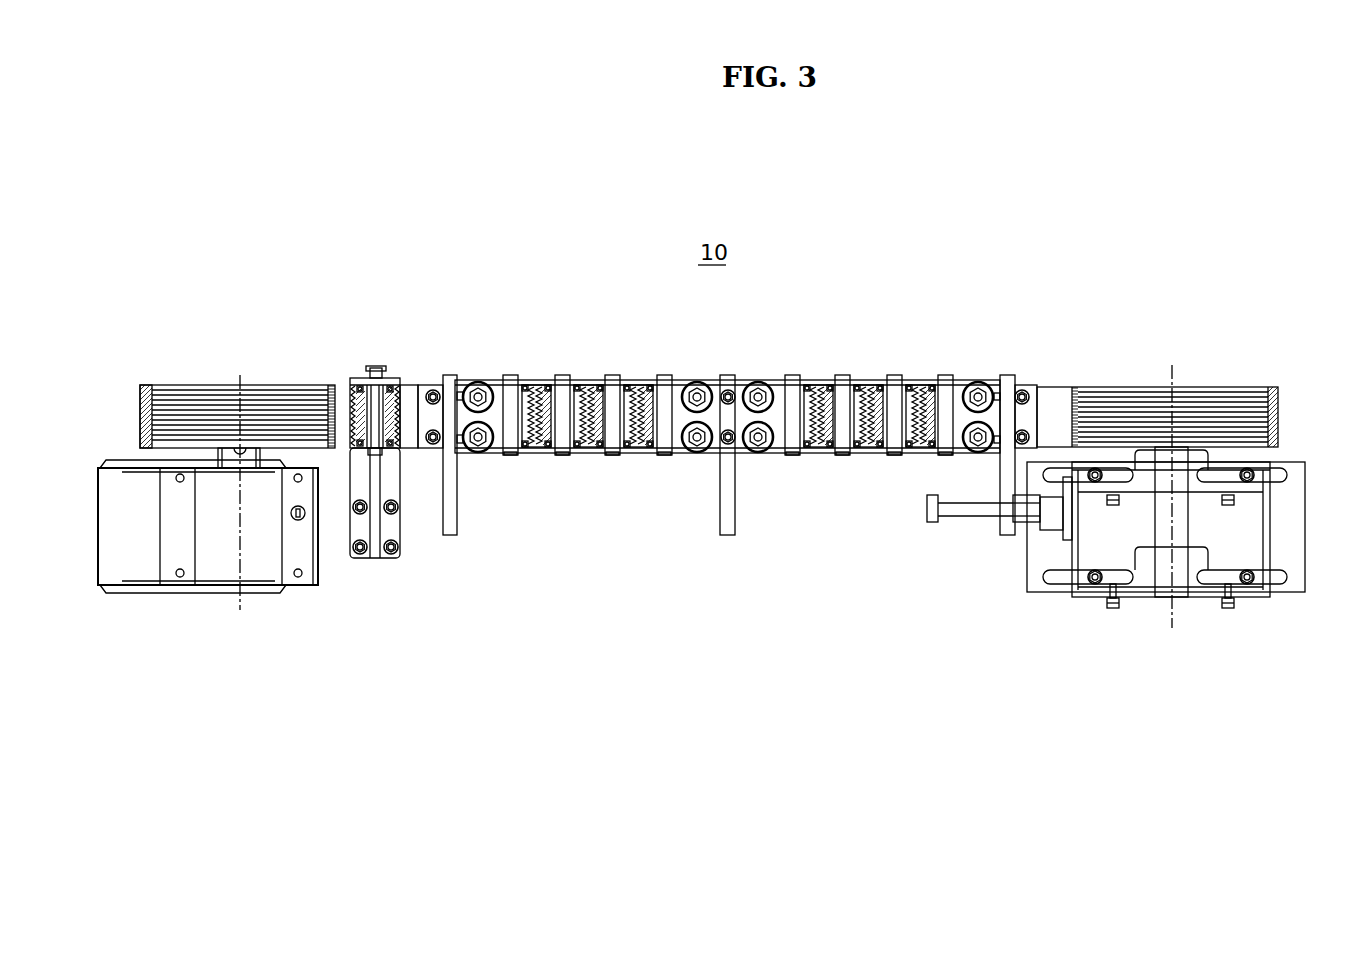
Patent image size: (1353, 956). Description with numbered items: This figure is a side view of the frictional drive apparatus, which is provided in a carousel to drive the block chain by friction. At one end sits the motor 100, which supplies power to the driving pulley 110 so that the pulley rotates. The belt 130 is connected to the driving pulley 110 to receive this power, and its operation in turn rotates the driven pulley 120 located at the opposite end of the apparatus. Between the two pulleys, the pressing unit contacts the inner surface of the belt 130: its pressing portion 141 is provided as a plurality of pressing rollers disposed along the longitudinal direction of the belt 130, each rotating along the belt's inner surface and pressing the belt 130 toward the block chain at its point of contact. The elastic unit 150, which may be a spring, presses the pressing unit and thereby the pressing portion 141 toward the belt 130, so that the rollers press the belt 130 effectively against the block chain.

The motor 100 is at (208, 578).
The driving pulley 110 is at (207, 386).
The driven pulley 120 is at (1143, 387).
The belt 130 is at (136, 386).
The pressing portion 141 is at (645, 386).
The elastic unit 150 is at (488, 408).